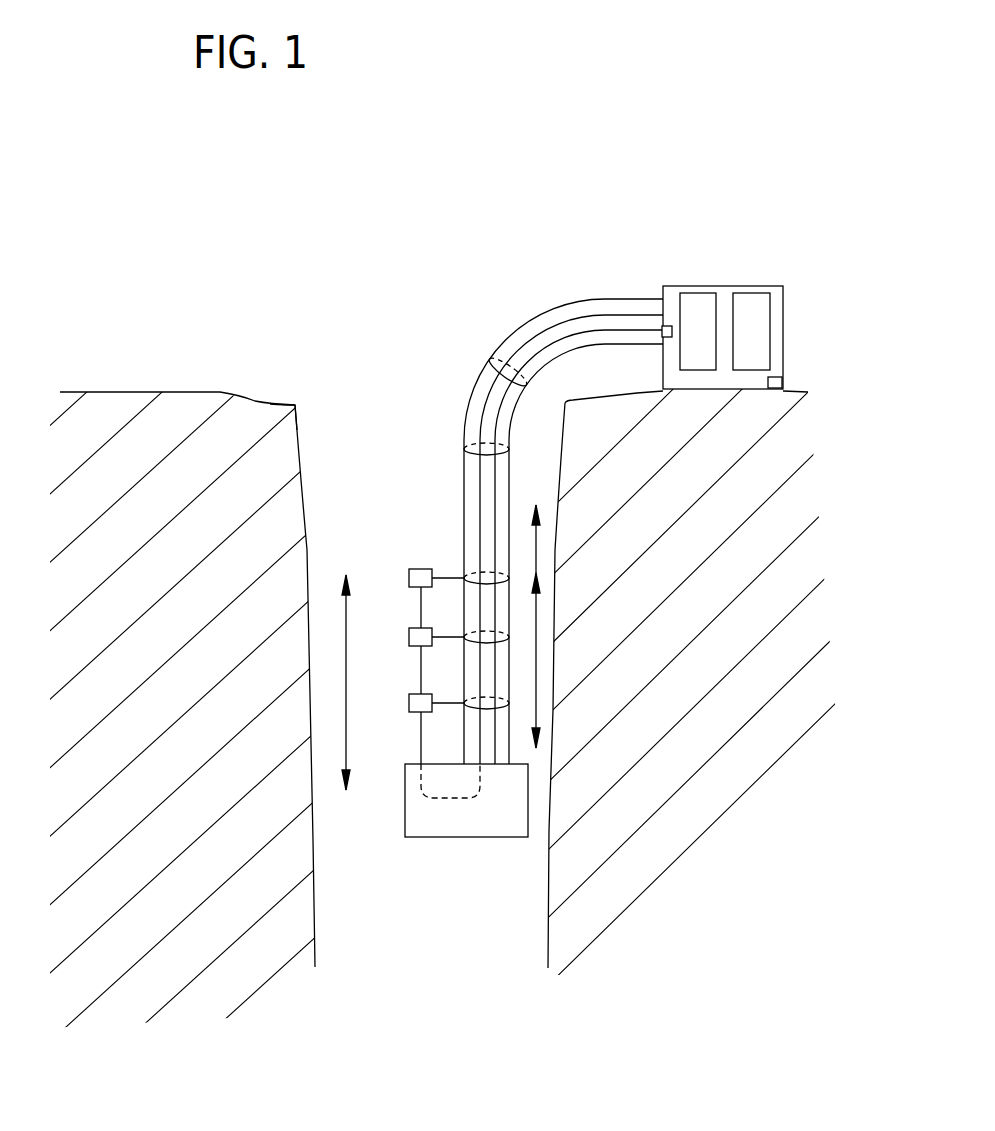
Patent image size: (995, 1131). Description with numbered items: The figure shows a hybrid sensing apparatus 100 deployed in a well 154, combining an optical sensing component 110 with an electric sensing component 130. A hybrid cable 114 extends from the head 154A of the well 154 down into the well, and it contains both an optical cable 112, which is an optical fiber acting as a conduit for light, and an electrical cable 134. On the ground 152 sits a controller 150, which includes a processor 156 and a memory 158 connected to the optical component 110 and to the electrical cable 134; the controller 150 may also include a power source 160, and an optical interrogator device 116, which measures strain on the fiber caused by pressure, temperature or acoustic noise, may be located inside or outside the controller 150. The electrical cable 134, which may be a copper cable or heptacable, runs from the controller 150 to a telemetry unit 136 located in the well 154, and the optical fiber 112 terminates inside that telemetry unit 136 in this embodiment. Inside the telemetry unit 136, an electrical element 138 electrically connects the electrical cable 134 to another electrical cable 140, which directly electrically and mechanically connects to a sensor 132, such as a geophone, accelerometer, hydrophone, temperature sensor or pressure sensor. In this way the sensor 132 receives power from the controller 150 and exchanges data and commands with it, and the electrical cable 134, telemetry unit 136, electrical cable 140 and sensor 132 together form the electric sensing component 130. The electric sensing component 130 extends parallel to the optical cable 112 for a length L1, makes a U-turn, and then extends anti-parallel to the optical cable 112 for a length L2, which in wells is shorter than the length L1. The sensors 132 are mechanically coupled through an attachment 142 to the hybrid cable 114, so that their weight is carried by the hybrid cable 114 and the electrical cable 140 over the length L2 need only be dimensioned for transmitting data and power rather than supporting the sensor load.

The hybrid sensing apparatus 100 is at (488, 252).
The optical sensing component 110 is at (520, 505).
The optical cable 112 is at (505, 407).
The hybrid cable 114 is at (462, 483).
The optical interrogator device 116 is at (668, 326).
The electric sensing component 130 is at (442, 726).
The sensor 132 is at (409, 705).
The electrical cable 134 is at (523, 338).
The telemetry unit 136 is at (496, 837).
The electrical element 138 is at (450, 798).
The electrical cable 140 is at (421, 741).
The attachment 142 is at (443, 576).
The controller 150 is at (753, 339).
The ground 152 is at (140, 391).
The well 154 is at (309, 578).
The head 154A is at (297, 404).
The processor 156 is at (697, 371).
The memory 158 is at (755, 371).
The power source 160 is at (783, 381).
The length L1 is at (540, 618).
The length L2 is at (346, 640).